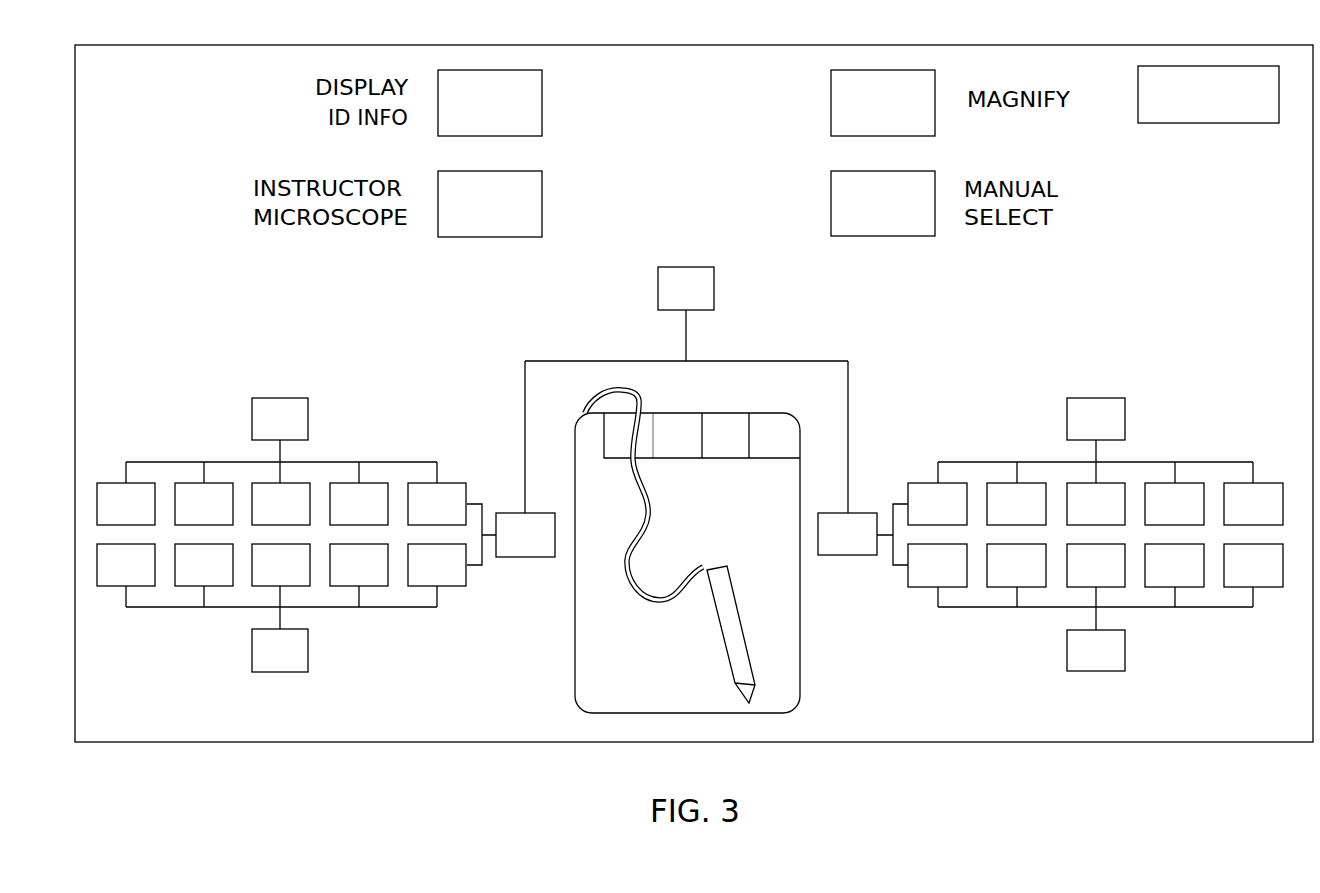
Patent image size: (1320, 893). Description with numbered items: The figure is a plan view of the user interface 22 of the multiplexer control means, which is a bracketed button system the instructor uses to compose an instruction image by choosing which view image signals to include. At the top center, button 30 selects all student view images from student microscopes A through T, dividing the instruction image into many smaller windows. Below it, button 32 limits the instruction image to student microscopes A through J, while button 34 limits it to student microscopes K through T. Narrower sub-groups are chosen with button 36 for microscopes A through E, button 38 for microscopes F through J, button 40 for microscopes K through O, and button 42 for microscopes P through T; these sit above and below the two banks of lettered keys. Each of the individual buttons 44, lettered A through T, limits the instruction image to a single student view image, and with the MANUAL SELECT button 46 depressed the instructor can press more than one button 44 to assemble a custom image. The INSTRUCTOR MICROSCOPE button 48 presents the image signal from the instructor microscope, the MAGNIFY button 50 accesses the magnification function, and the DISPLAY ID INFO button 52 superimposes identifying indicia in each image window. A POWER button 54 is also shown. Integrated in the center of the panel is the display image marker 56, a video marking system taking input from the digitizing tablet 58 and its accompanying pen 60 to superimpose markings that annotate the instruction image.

The user interface 22 is at (367, 742).
The button 30 is at (686, 267).
The button 32 is at (510, 557).
The button 34 is at (865, 555).
The button 36 is at (280, 398).
The button 38 is at (280, 672).
The button 40 is at (1096, 398).
The button 42 is at (1096, 671).
The buttons 44 is at (105, 482).
The MANUAL SELECT button 46 is at (870, 236).
The INSTRUCTOR MICROSCOPE button 48 is at (478, 237).
The MAGNIFY button 50 is at (831, 96).
The DISPLAY ID INFO button 52 is at (542, 97).
The POWER button 54 is at (1221, 123).
The display image marker 56 is at (740, 396).
The digitizing tablet 58 is at (693, 520).
The pen 60 is at (723, 638).